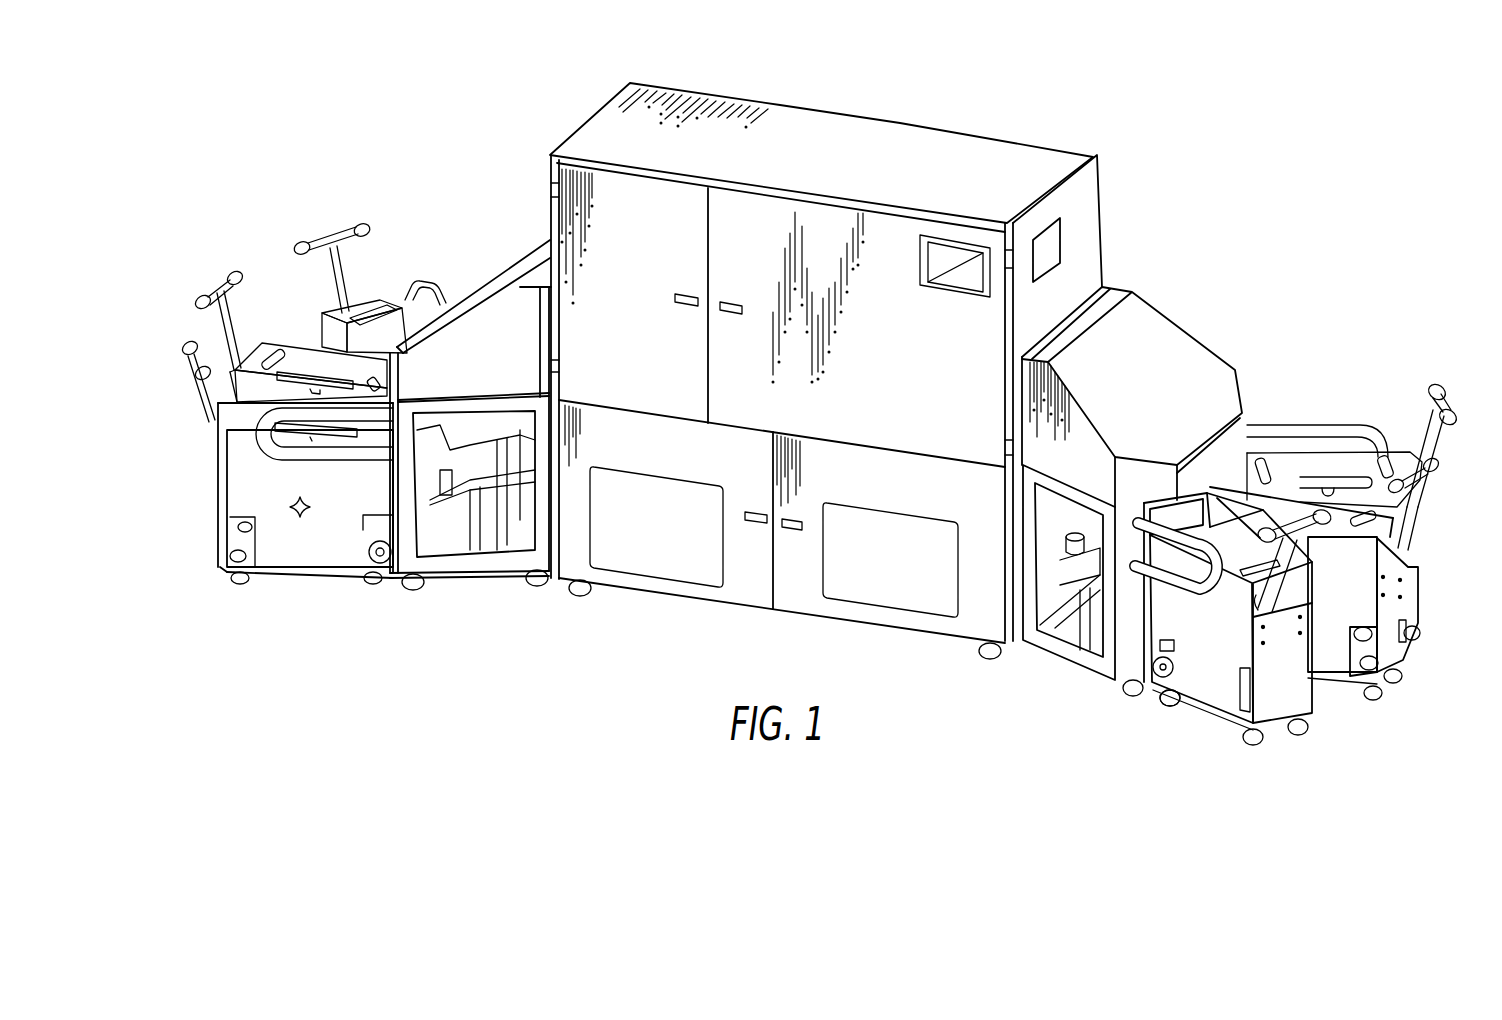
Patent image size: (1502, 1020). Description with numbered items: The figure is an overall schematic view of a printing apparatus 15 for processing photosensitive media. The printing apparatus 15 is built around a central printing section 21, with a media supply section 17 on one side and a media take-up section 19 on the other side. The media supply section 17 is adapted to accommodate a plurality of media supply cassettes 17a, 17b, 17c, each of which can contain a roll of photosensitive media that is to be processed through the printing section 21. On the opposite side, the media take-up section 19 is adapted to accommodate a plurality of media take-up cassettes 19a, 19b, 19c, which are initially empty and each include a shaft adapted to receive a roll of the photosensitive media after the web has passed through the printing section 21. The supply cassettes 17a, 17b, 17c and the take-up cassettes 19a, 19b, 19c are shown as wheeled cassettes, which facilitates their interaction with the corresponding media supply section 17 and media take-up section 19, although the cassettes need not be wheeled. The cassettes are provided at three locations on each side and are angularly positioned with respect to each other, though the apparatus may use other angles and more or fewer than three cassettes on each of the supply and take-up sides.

The printing apparatus 15 is at (957, 115).
The printing section 21 is at (813, 123).
The media supply section 17 is at (487, 288).
The media supply cassette 17a is at (240, 485).
The media supply cassette 17b is at (296, 355).
The media supply cassette 17c is at (383, 298).
The media take-up section 19 is at (1205, 372).
The media take-up cassette 19a is at (1292, 680).
The media take-up cassette 19b is at (1395, 595).
The media take-up cassette 19c is at (1315, 467).